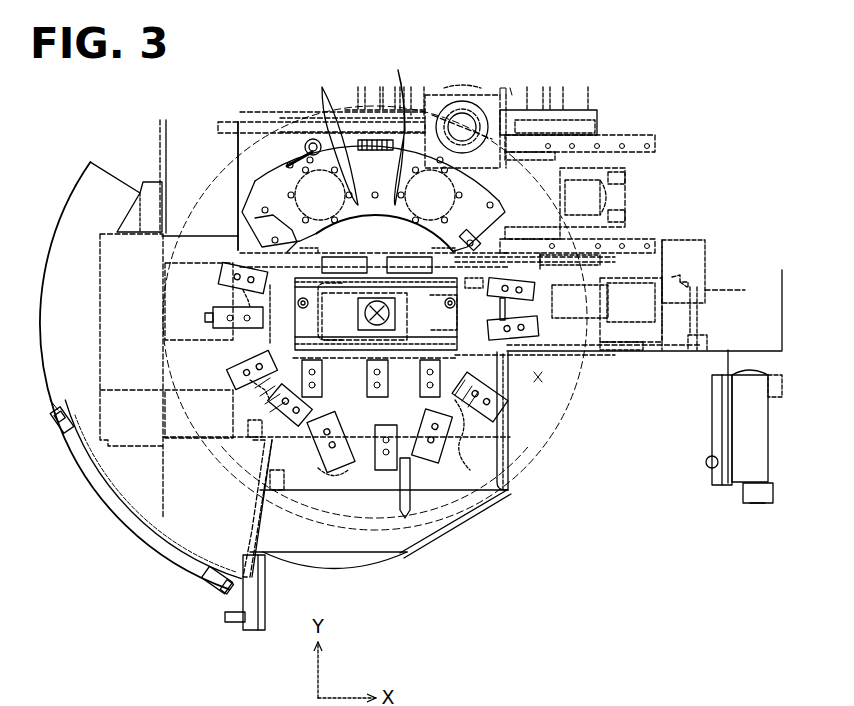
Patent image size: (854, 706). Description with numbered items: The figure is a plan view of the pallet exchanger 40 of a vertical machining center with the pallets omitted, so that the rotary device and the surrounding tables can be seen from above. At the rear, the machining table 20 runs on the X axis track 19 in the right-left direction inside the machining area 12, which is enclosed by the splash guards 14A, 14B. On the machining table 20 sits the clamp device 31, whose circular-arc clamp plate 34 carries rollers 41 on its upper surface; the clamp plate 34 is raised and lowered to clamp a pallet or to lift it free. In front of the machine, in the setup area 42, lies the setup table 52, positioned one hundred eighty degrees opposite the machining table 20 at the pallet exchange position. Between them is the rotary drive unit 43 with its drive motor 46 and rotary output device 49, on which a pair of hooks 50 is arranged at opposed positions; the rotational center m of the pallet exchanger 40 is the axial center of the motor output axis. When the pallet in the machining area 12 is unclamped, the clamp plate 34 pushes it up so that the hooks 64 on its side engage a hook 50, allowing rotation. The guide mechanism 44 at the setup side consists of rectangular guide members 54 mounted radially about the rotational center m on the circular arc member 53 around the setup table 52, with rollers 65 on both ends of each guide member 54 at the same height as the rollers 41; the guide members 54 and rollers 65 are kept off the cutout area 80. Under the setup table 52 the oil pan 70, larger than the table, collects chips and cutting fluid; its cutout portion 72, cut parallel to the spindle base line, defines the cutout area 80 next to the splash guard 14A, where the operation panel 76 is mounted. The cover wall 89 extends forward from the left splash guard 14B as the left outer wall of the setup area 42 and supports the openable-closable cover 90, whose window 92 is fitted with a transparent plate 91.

The machining area 12 is at (205, 135).
The splash guard 14A is at (712, 358).
The splash guard 14B is at (160, 142).
The X axis track 19 is at (644, 142).
The machining table 20 is at (240, 148).
The clamp device 31 is at (286, 160).
The clamp plate 34 is at (280, 185).
The pallet exchanger 40 is at (303, 512).
The rollers 41 is at (323, 90).
The setup area 42 is at (523, 478).
The rotary drive unit 43 is at (398, 378).
The guide mechanism 44 is at (257, 443).
The drive motor 46 is at (440, 315).
The rotary output device 49 is at (318, 312).
The hooks 50 is at (355, 258).
The setup table 52 is at (342, 452).
The circular arc member 53 is at (450, 445).
The guide members 54 is at (222, 302).
The hooks 64 is at (225, 265).
The rollers 65 is at (502, 494).
The oil pan 70 is at (455, 518).
The cutout portion 72 is at (512, 427).
The operation panel 76 is at (712, 447).
The cutout area 80 is at (540, 382).
The cover wall 89 is at (90, 330).
The openable-closable cover 90 is at (58, 426).
The transparent plate 91 is at (115, 512).
The window 92 is at (204, 583).
The rotational center m is at (456, 303).